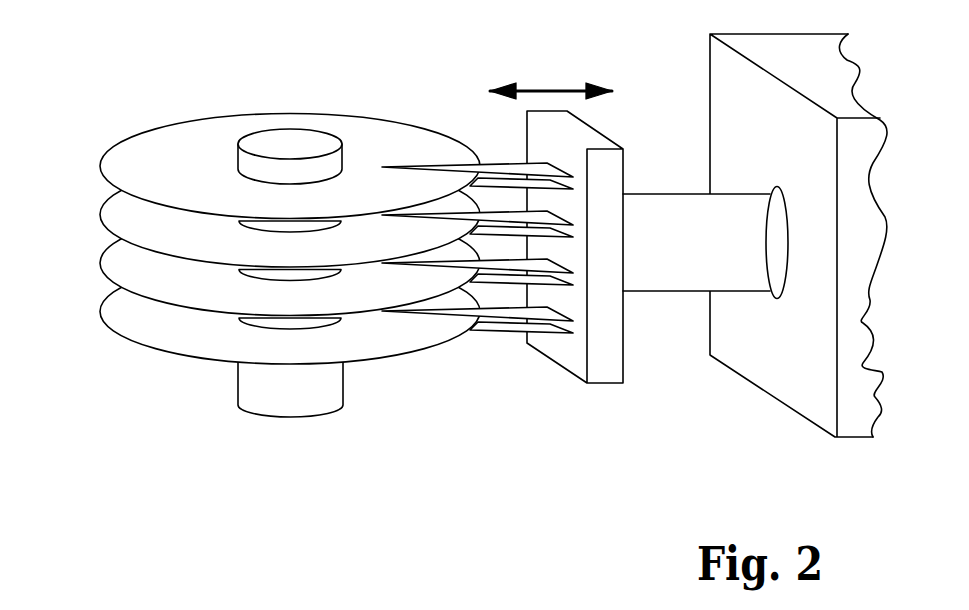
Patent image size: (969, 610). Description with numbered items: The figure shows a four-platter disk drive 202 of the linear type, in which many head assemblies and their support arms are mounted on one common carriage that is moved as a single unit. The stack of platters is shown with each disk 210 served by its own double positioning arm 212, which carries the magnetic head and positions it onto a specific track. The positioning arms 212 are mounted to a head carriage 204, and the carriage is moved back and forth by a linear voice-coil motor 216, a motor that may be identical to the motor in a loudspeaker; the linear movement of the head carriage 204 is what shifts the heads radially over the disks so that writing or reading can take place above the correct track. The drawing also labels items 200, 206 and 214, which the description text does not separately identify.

The disk drive 200 is at (277, 275).
The four-platter disk drive 202 is at (277, 301).
The head carriage 204 is at (625, 162).
The spindle 206 is at (295, 420).
The disk 210 is at (126, 152).
The double positioning arm 212 is at (517, 167).
The actuator 214 is at (610, 385).
The linear voice-coil motor 216 is at (823, 433).